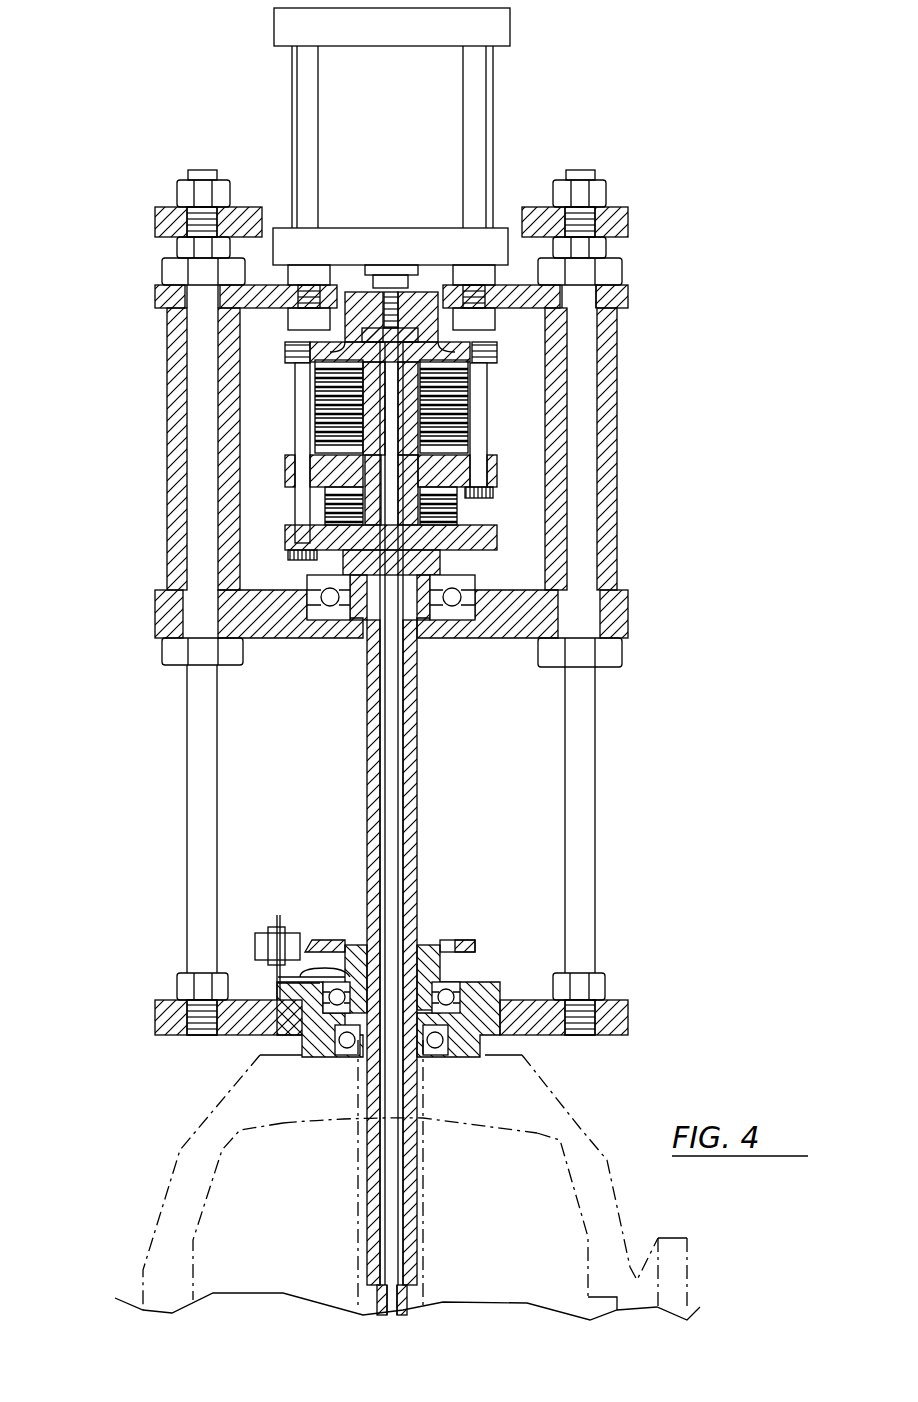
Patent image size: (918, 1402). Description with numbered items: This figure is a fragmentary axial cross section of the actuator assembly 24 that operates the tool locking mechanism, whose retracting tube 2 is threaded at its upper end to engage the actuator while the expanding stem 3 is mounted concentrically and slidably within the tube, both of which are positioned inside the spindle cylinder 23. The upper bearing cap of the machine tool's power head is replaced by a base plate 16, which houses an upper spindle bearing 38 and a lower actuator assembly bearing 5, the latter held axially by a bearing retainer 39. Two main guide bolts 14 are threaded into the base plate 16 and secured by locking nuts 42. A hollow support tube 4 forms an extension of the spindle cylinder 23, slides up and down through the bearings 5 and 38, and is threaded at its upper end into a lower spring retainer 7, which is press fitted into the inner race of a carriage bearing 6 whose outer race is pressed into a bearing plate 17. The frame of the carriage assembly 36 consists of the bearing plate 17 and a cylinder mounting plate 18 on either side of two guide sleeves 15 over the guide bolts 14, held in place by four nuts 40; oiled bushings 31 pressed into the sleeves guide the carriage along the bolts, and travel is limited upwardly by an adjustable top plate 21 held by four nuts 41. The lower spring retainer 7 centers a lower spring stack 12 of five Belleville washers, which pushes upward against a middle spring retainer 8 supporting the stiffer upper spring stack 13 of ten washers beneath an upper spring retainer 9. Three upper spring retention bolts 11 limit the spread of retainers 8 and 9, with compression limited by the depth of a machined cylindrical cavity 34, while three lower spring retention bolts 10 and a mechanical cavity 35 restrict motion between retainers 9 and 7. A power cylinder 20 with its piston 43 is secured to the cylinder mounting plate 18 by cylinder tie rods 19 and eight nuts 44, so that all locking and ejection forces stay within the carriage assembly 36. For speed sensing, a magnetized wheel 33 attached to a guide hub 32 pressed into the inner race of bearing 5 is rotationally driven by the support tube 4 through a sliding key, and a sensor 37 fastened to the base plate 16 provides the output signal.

The retracting tube 2 is at (410, 768).
The expanding stem 3 is at (400, 838).
The support tube 4 is at (373, 735).
The lower actuator assembly bearing 5 is at (342, 1008).
The carriage bearing 6 is at (325, 617).
The lower spring retainer 7 is at (287, 548).
The middle spring retainer 8 is at (493, 483).
The upper spring retainer 9 is at (497, 352).
The lower spring retention bolts 10 is at (300, 447).
The upper spring retention bolts 11 is at (478, 458).
The lower spring stack 12 is at (326, 508).
The upper spring stack 13 is at (470, 408).
The main guide bolts 14 is at (580, 865).
The guide sleeves 15 is at (610, 505).
The base plate 16 is at (158, 1016).
The bearing plate 17 is at (615, 598).
The cylinder mounting plate 18 is at (628, 296).
The cylinder tie rods 19 is at (478, 75).
The power cylinder 20 is at (420, 97).
The adjustable top plate 21 is at (622, 222).
The spindle cylinder 23 is at (426, 1278).
The actuator assembly 24 is at (140, 522).
The oiled bushings 31 is at (606, 630).
The guide hub 32 is at (360, 962).
The magnetized wheel 33 is at (310, 945).
The machined cylindrical cavity 34 is at (372, 300).
The mechanical cavity 35 is at (362, 470).
The carriage assembly 36 is at (650, 452).
The sensor 37 is at (258, 942).
The upper spindle bearing 38 is at (348, 1055).
The bearing retainer 39 is at (300, 976).
The nuts 40 is at (590, 265).
The nuts 41 is at (183, 190).
The locking nuts 42 is at (603, 988).
The piston 43 is at (400, 282).
The nuts 44 is at (478, 272).